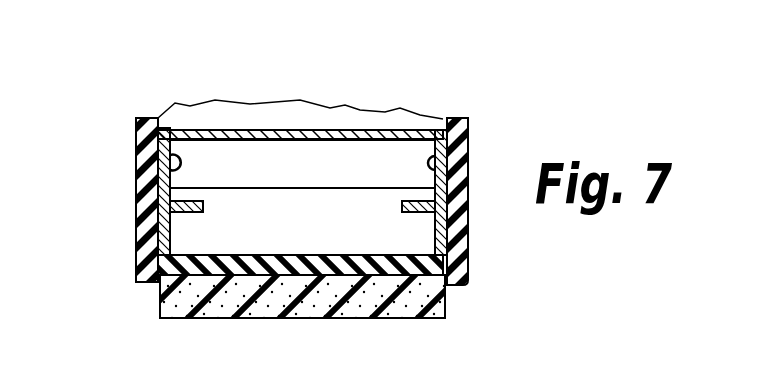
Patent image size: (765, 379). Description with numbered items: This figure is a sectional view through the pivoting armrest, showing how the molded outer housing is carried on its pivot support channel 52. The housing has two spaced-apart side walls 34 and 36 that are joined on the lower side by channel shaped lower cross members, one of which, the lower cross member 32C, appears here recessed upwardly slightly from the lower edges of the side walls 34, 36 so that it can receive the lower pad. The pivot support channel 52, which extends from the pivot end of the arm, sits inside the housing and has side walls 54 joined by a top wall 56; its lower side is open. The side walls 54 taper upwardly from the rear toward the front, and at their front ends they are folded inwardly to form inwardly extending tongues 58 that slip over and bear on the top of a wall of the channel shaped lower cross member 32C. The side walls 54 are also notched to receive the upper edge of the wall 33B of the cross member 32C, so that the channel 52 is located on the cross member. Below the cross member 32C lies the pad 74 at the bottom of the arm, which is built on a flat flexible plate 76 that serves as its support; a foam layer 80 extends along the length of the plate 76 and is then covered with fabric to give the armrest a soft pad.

The side wall 36 is at (136, 128).
The side wall 34 is at (469, 118).
The lower cross member 32C is at (223, 254).
The pivot support channel 52 is at (259, 122).
The top wall 56 is at (309, 130).
The wall 33B is at (382, 205).
The side walls 54 is at (172, 152).
The inwardly extending tongues 58 is at (186, 212).
The pad 74 is at (198, 327).
The flat flexible plate 76 is at (255, 305).
The foam layer 80 is at (366, 318).